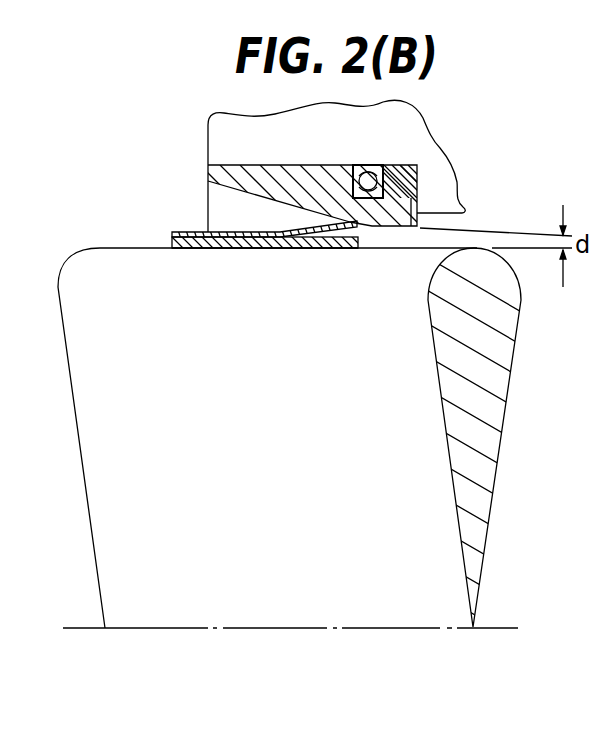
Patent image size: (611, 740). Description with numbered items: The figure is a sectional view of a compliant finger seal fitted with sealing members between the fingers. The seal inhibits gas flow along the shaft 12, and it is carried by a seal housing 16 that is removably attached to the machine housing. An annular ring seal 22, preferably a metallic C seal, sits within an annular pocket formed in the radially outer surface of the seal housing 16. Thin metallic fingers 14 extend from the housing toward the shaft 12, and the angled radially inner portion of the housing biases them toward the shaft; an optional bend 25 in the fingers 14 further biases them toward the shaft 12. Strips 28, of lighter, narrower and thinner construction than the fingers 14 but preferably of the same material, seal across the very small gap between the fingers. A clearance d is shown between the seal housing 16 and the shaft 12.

The shaft 12 is at (493, 359).
The fingers 14 is at (355, 233).
The seal housing 16 is at (237, 187).
The annular ring seal 22 is at (392, 167).
The bend 25 is at (297, 249).
The strips 28 is at (202, 232).